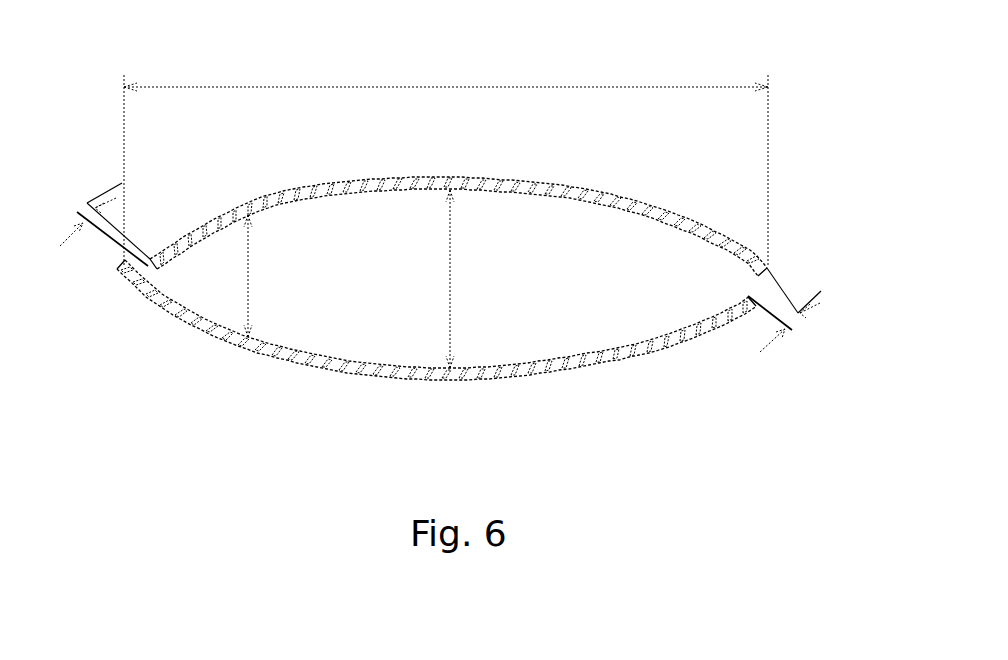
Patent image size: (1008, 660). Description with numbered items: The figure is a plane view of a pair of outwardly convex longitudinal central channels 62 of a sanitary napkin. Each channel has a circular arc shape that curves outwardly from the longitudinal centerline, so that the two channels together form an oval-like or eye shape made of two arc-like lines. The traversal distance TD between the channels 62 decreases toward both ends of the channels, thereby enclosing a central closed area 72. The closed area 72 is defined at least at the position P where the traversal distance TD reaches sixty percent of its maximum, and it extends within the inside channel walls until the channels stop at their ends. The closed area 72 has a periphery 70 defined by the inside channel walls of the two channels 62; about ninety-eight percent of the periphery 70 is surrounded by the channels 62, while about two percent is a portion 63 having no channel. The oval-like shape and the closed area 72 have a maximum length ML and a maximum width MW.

The outwardly convex longitudinal central channel 62 is at (442, 280).
The portion having no channel 63 is at (85, 208).
The periphery 70 is at (650, 215).
The central closed area 72 is at (402, 331).
The position P is at (258, 187).
The maximum length ML is at (437, 87).
The traversal distance TD is at (248, 277).
The maximum width MW is at (450, 278).